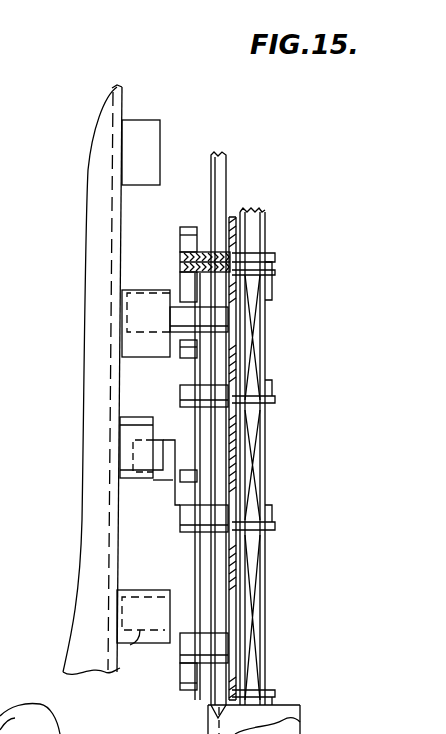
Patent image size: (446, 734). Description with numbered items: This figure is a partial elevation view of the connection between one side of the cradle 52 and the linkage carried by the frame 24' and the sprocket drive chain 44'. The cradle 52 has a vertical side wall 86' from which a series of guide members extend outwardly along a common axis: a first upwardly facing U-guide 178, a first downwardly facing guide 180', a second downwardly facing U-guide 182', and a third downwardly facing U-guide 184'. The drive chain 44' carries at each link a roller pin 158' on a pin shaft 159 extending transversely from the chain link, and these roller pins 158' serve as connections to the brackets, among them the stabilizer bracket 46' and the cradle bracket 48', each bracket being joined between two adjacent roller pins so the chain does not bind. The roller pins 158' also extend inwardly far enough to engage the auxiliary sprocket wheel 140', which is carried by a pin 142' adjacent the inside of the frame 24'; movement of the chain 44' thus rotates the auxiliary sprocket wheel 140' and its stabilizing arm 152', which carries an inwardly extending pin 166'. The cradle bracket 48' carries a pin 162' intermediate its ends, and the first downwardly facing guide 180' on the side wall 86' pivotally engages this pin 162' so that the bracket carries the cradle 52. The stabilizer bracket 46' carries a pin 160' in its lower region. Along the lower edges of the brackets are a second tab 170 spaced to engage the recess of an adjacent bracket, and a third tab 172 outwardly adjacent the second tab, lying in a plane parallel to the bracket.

The vertical side wall 86' is at (109, 371).
The cradle 52 is at (80, 187).
The first upwardly facing U-guide 178 is at (161, 128).
The frame 24' is at (232, 418).
The pin shaft 159 is at (181, 262).
The pin 142' is at (258, 486).
The roller pin 158' is at (173, 429).
The pin 162' is at (245, 310).
The auxiliary sprocket wheel 140' is at (111, 315).
The first downwardly facing guide 180' is at (111, 328).
The second downwardly facing U-guide 182' is at (99, 447).
The pin 166' is at (104, 484).
The stabilizing arm 152' is at (149, 484).
The third downwardly facing U-guide 184' is at (89, 617).
The cradle bracket 48' is at (269, 456).
The sprocket drive chain 44' is at (270, 458).
The stabilizer bracket 46' is at (272, 560).
The pin 160' is at (280, 586).
The second tab 170 is at (217, 719).
The third tab 172 is at (57, 719).